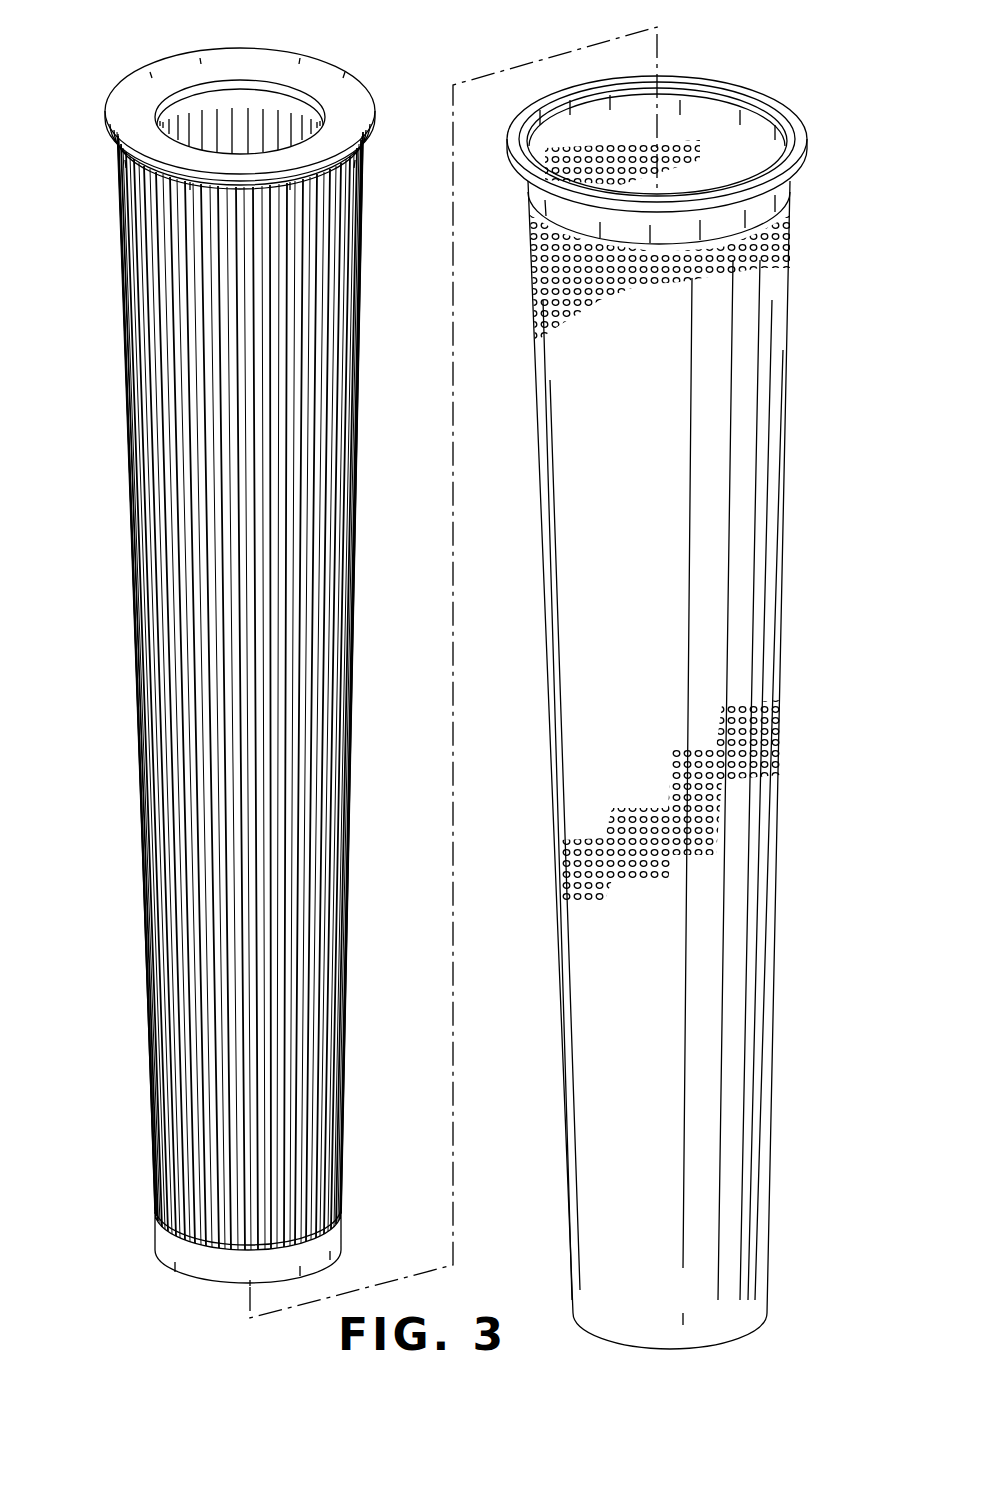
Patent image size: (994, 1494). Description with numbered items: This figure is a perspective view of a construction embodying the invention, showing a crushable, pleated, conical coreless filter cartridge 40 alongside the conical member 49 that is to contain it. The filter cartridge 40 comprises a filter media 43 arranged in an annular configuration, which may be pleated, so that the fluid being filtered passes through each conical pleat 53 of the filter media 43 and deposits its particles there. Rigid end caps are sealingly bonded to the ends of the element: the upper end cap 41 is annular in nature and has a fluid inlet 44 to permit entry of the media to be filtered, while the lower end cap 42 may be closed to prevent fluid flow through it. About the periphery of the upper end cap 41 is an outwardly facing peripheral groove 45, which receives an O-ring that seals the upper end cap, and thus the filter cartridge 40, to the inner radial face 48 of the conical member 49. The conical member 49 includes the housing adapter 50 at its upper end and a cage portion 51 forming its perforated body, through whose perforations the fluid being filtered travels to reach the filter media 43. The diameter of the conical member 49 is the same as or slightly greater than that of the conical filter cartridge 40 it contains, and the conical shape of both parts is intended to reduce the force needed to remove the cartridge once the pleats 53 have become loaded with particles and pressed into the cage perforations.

The conical filter cartridge 40 is at (126, 772).
The upper end cap 41 is at (150, 93).
The lower end cap 42 is at (333, 1242).
The filter media 43 is at (140, 527).
The fluid inlet 44 is at (285, 107).
The outwardly facing peripheral groove 45 is at (123, 153).
The inner radial face 48 is at (755, 120).
The conical member 49 is at (760, 518).
The housing adapter 50 is at (812, 140).
The cage portion 51 is at (752, 1080).
The conical pleat 53 is at (163, 323).